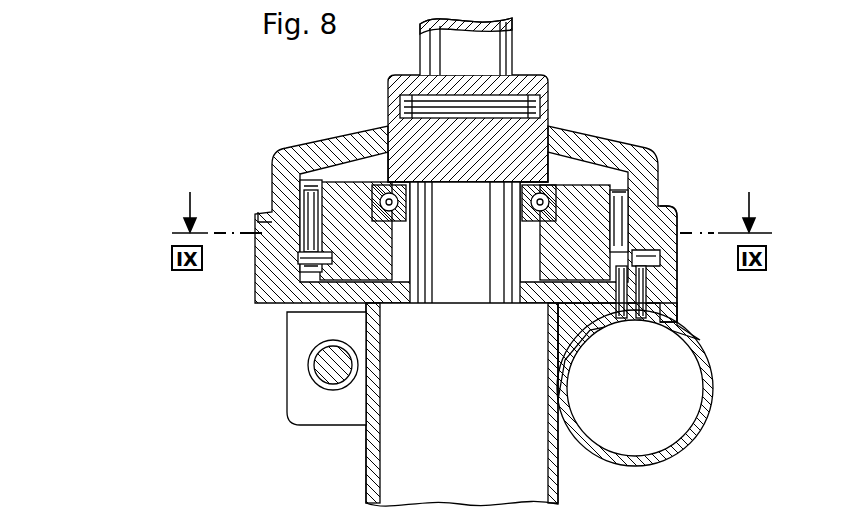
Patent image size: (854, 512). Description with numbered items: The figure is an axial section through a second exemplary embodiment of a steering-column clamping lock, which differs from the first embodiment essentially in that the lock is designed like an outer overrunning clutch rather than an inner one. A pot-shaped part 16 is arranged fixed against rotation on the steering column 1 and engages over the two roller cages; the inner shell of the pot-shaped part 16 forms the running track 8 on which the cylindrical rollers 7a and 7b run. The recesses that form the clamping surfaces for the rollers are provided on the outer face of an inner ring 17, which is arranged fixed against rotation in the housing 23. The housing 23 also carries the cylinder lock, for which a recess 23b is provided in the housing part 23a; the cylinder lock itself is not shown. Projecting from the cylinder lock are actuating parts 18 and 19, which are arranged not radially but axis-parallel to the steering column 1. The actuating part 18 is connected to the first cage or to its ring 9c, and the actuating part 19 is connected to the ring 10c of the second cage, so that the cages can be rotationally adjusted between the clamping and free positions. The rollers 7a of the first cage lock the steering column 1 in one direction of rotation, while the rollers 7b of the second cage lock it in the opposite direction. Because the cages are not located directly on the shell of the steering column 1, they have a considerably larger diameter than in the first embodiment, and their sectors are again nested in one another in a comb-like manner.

The steering column 1 is at (426, 441).
The cylindrical rollers 7a is at (306, 222).
The cylindrical rollers 7b is at (622, 204).
The running track 8 is at (302, 196).
The ring of the first cage 9c is at (648, 256).
The ring of the second cage 10c is at (668, 260).
The pot-shaped part 16 is at (345, 146).
The inner ring 17 is at (310, 242).
The actuating part 18 is at (622, 290).
The actuating part 19 is at (642, 302).
The housing 23 is at (270, 284).
The housing part 23a is at (712, 378).
The recess 23b is at (642, 442).